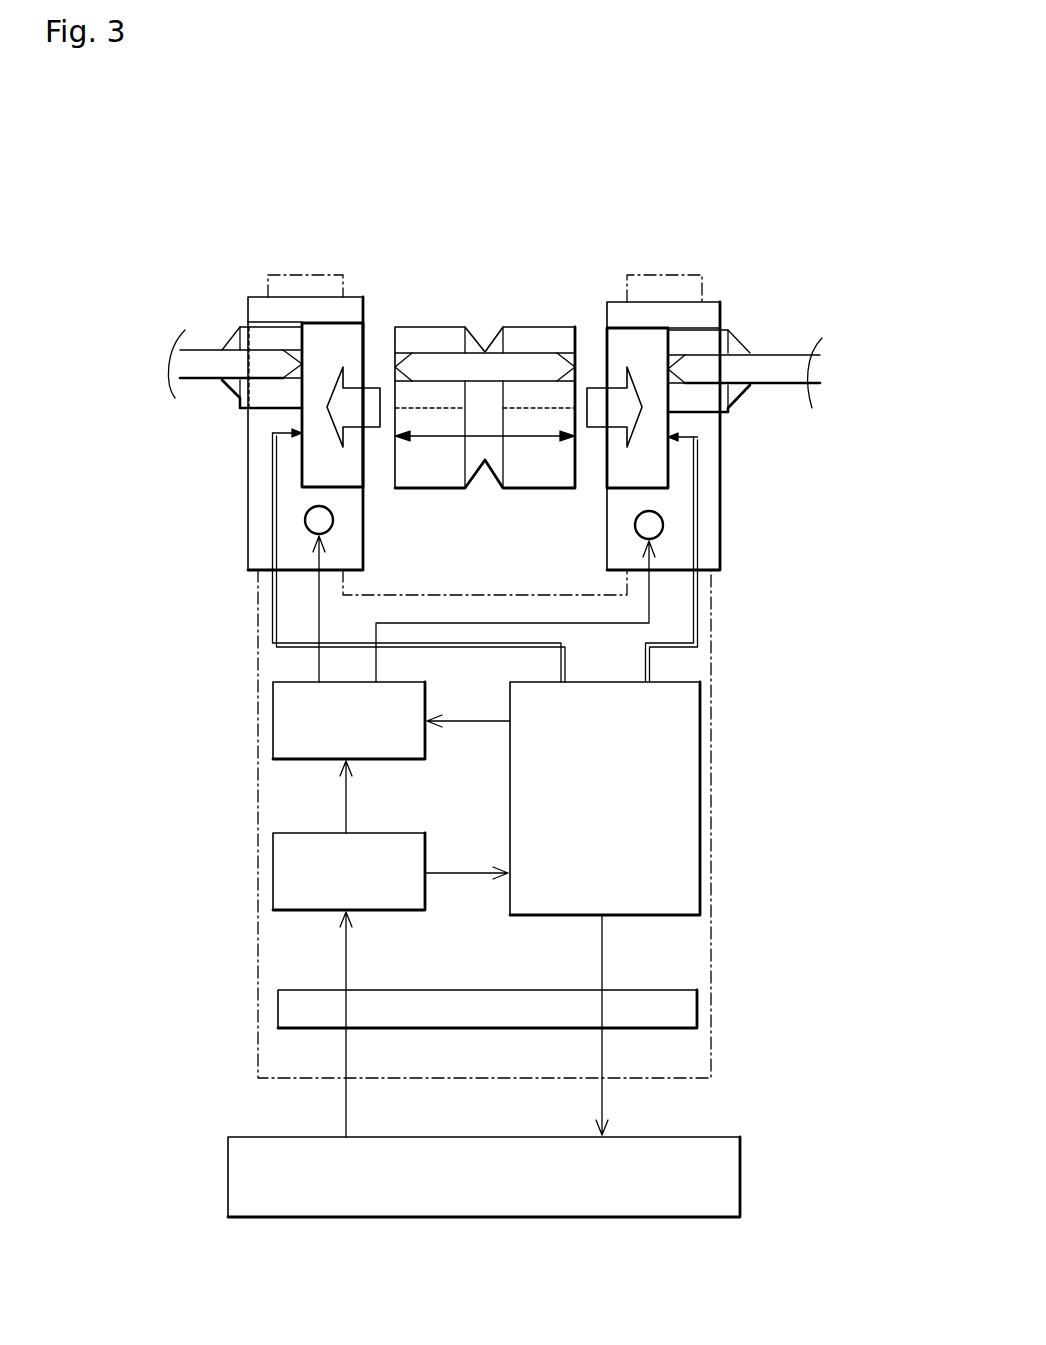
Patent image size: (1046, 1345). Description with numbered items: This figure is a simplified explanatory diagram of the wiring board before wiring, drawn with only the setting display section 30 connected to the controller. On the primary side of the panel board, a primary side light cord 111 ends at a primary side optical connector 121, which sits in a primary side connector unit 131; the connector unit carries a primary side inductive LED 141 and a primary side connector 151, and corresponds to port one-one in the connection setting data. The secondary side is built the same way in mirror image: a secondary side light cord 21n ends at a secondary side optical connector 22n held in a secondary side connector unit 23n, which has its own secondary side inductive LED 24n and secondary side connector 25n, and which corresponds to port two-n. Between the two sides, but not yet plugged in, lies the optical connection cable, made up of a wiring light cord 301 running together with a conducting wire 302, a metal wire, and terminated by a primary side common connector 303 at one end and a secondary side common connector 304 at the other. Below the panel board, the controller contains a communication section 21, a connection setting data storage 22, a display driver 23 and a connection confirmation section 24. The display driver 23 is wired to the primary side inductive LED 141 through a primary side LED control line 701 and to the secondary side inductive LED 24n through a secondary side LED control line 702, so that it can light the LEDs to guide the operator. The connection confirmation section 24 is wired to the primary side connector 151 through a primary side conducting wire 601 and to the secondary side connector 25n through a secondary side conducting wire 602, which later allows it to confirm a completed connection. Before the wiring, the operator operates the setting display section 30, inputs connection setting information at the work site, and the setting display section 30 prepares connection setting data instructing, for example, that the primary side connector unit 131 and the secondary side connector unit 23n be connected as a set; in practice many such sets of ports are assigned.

The primary side light cord 111 is at (203, 350).
The primary side optical connector 121 is at (260, 335).
The primary side connector unit 131 is at (263, 307).
The primary side inductive LED 141 is at (318, 520).
The primary side connector 151 is at (299, 436).
The wiring light cord 301 is at (445, 358).
The conducting wire 302 is at (435, 440).
The primary side common connector 303 is at (408, 340).
The secondary side common connector 304 is at (533, 338).
The secondary side light cord 21n is at (767, 358).
The secondary side optical connector 22n is at (692, 337).
The secondary side connector unit 23n is at (638, 310).
The secondary side inductive LED 24n is at (653, 523).
The secondary side connector 25n is at (672, 445).
The communication section 21 is at (290, 997).
The connection setting data storage 22 is at (290, 843).
The display driver 23 is at (294, 694).
The connection confirmation section 24 is at (516, 740).
The setting display section 30 is at (243, 1143).
The primary side conducting wire 601 is at (272, 633).
The secondary side conducting wire 602 is at (648, 662).
The primary side LED control line 701 is at (313, 583).
The secondary side LED control line 702 is at (650, 615).